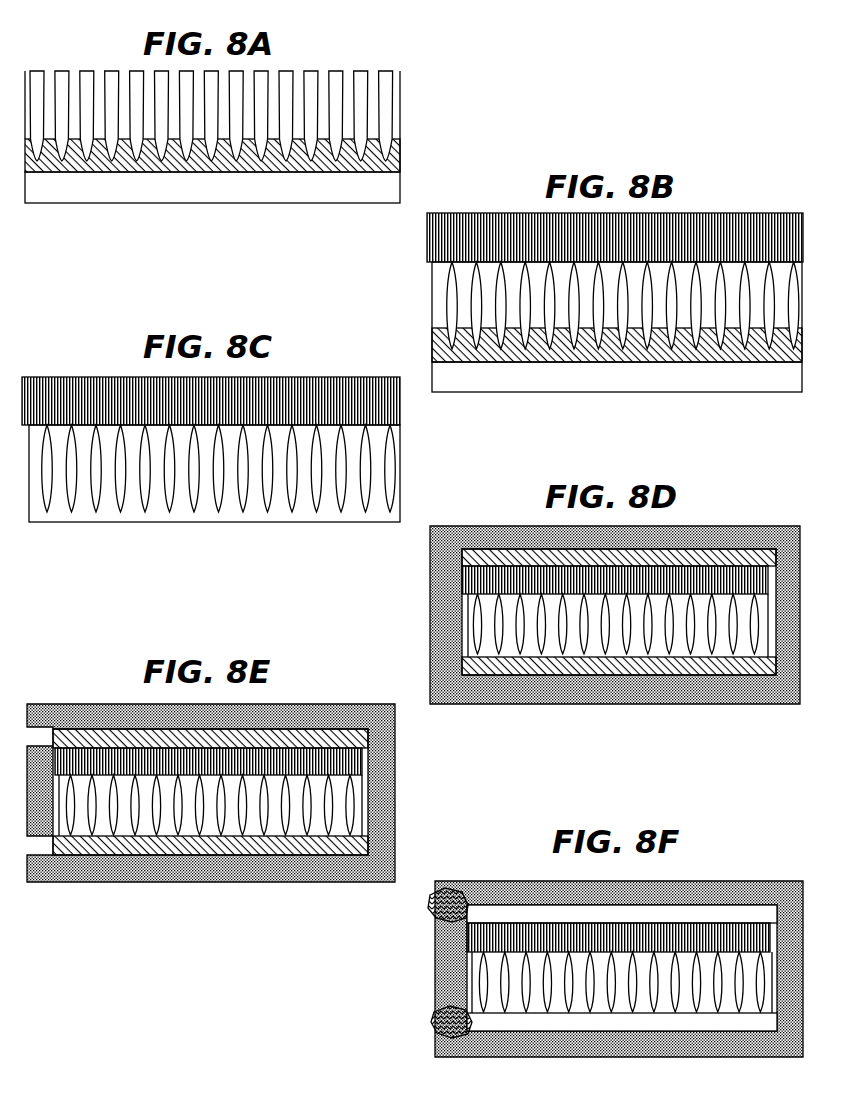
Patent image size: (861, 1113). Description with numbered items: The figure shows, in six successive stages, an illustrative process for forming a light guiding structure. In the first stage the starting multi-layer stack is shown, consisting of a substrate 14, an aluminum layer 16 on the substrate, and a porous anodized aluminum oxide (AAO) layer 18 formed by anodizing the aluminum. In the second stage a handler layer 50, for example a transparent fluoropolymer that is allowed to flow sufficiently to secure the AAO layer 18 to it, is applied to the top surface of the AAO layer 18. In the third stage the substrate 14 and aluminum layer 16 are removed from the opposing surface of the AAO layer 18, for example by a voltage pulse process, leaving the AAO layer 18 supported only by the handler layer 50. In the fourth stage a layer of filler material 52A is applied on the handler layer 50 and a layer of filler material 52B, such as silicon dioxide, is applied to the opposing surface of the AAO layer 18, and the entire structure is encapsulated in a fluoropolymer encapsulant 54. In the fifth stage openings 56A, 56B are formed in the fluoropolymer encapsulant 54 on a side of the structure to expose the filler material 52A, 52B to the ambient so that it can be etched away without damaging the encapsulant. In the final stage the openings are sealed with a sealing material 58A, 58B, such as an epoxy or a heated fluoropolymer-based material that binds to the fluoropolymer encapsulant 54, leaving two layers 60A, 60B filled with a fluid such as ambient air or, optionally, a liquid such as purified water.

In FIG. 8A, the substrate 14 is at (406, 183).
In FIG. 8A, the aluminum layer 16 is at (406, 153).
In FIG. 8A, the anodized aluminum oxide (AAO) layer 18 is at (406, 106).
In FIG. 8B, the anodized aluminum oxide (AAO) layer 18 is at (421, 298).
In FIG. 8C, the anodized aluminum oxide (AAO) layer 18 is at (412, 466).
In FIG. 8B, the handler layer 50 is at (736, 236).
In FIG. 8C, the handler layer 50 is at (323, 395).
In FIG. 8D, the filler material 52A is at (722, 558).
In FIG. 8D, the filler material 52B is at (680, 668).
In FIG. 8D, the fluoropolymer encapsulant 54 is at (532, 688).
In FIG. 8E, the opening 56A is at (42, 738).
In FIG. 8E, the opening 56B is at (42, 848).
In FIG. 8F, the sealing material 58A is at (452, 905).
In FIG. 8F, the sealing material 58B is at (450, 1020).
In FIG. 8F, the layer filled with a fluid 60A is at (722, 912).
In FIG. 8F, the layer filled with a fluid 60B is at (597, 1022).